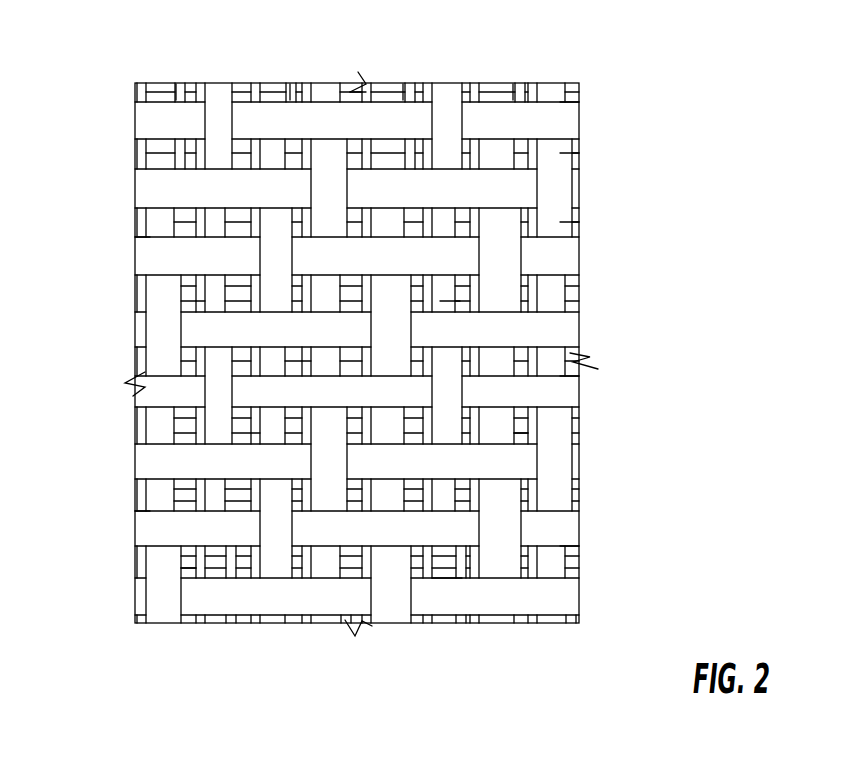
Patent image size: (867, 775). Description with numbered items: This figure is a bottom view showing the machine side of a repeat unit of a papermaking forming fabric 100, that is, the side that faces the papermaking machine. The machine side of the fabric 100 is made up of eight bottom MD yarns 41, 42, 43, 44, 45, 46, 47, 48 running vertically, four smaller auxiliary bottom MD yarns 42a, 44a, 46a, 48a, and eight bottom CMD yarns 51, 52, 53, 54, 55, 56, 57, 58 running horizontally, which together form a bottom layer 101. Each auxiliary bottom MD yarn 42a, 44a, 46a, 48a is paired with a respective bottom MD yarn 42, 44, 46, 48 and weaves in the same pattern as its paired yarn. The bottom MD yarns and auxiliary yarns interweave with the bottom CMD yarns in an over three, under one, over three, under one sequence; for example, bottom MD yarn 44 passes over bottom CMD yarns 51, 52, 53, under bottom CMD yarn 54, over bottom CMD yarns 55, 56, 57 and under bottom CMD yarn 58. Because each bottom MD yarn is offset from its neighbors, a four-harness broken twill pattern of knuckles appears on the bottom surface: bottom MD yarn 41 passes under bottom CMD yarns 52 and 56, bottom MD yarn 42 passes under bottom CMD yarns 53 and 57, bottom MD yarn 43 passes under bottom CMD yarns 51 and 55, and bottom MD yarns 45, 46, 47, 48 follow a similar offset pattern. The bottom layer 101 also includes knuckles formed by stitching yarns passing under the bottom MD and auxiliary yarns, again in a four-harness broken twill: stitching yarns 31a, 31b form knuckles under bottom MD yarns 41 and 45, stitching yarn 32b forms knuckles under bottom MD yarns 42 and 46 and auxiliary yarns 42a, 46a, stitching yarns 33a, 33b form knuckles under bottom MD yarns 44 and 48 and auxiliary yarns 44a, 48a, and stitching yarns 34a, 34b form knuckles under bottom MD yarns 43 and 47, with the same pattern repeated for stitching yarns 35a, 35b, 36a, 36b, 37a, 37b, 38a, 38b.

The papermaking forming fabric 100 is at (719, 191).
The bottom layer 101 is at (717, 356).
The bottom MD yarn 41 is at (538, 623).
The bottom MD yarn 42 is at (483, 623).
The bottom MD yarn 43 is at (428, 625).
The bottom MD yarn 44 is at (375, 622).
The bottom MD yarn 45 is at (322, 625).
The bottom MD yarn 46 is at (270, 625).
The bottom MD yarn 47 is at (218, 627).
The bottom MD yarn 48 is at (158, 627).
The bottom CMD yarn 51 is at (570, 130).
The bottom CMD yarn 52 is at (576, 194).
The bottom CMD yarn 53 is at (568, 257).
The bottom CMD yarn 54 is at (572, 320).
The bottom CMD yarn 55 is at (568, 397).
The bottom CMD yarn 56 is at (572, 460).
The bottom CMD yarn 57 is at (568, 530).
The bottom CMD yarn 58 is at (568, 607).
The auxiliary bottom MD yarn 48a is at (178, 92).
The auxiliary bottom MD yarn 46a is at (292, 92).
The stitching yarn 31b is at (340, 52).
The auxiliary bottom MD yarn 44a is at (403, 92).
The auxiliary bottom MD yarn 42a is at (513, 92).
The stitching yarn 31a is at (578, 98).
The stitching yarn 32b is at (580, 151).
The stitching yarn 33b is at (578, 228).
The stitching yarn 34a is at (455, 298).
The stitching yarn 35b is at (580, 370).
The stitching yarn 36a is at (521, 433).
The stitching yarn 37a is at (562, 530).
The stitching yarn 38b is at (450, 572).
The stitching yarn 33a is at (140, 231).
The stitching yarn 34b is at (206, 303).
The stitching yarn 35a is at (313, 367).
The stitching yarn 36b is at (260, 438).
The stitching yarn 37b is at (143, 505).
The stitching yarn 38a is at (188, 565).